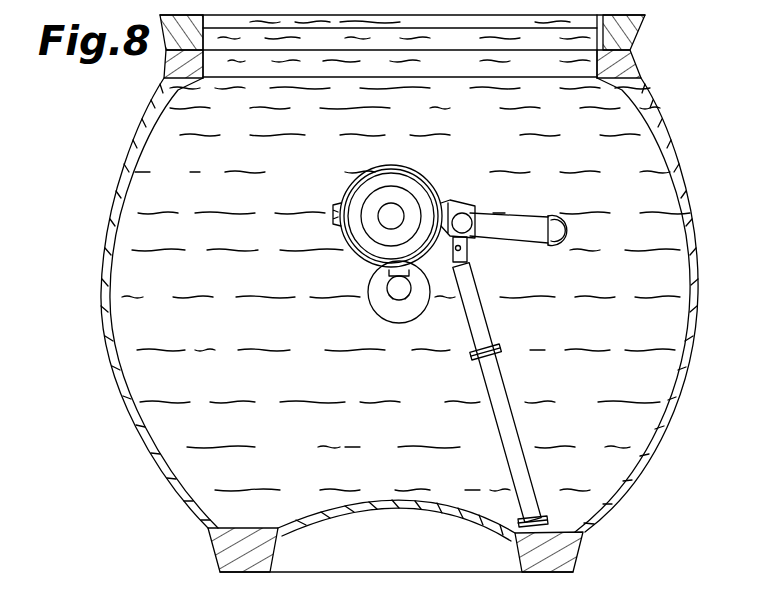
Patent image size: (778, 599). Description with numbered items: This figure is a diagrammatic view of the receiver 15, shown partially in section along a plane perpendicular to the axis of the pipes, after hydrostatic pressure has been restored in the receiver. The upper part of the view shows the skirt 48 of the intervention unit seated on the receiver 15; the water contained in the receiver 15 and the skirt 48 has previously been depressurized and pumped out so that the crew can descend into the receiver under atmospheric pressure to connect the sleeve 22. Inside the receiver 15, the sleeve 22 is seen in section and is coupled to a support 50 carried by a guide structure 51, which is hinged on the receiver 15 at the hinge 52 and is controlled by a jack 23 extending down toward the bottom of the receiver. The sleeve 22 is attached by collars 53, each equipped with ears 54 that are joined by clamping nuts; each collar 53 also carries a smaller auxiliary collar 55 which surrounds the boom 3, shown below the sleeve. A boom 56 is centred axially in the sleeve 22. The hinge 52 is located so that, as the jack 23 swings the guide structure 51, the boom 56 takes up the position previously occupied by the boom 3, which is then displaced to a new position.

The boom 3 is at (393, 289).
The receiver 15 is at (660, 143).
The sleeve 22 is at (358, 258).
The jack 23 is at (487, 333).
The skirt 48 is at (620, 42).
The support 50 is at (458, 205).
The guide structure 51 is at (526, 235).
The hinge 52 is at (564, 230).
The collar 53 is at (340, 238).
The ears 54 is at (332, 203).
The auxiliary collar 55 is at (385, 300).
The boom 56 is at (388, 200).